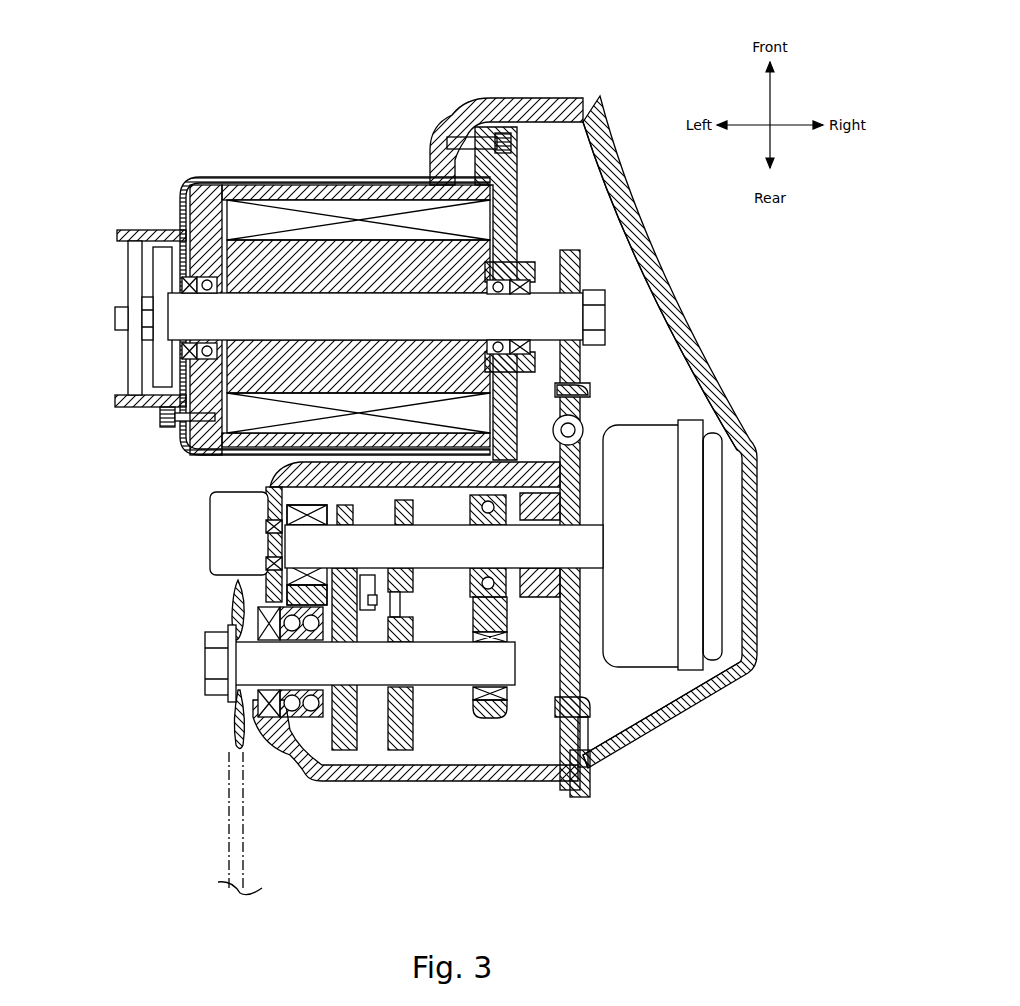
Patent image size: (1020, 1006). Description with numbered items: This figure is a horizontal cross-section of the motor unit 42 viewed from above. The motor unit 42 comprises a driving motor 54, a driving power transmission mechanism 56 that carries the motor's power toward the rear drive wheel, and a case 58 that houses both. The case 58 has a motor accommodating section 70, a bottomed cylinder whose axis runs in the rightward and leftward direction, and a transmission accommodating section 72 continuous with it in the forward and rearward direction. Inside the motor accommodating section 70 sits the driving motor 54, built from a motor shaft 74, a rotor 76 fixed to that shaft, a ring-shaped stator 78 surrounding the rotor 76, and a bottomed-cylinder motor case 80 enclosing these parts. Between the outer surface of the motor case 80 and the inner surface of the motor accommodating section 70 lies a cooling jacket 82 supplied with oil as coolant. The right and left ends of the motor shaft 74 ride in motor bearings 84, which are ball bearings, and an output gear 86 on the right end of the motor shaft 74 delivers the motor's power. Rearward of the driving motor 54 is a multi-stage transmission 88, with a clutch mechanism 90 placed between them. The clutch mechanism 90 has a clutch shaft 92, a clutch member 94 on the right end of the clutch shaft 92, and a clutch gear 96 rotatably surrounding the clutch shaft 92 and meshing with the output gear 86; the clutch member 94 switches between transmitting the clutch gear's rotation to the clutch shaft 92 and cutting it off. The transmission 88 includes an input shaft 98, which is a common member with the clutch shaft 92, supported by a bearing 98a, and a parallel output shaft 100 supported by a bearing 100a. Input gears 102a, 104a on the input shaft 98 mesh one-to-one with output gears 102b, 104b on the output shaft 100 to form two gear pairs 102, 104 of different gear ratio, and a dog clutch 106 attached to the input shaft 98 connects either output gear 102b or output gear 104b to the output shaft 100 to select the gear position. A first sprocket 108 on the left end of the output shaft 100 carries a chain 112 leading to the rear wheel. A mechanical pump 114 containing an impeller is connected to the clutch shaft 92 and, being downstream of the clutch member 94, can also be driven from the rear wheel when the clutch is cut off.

The motor unit 42 is at (706, 323).
The driving motor 54 is at (516, 234).
The driving power transmission mechanism 56 is at (603, 677).
The case 58 is at (517, 100).
The motor accommodating section 70 is at (312, 178).
The transmission accommodating section 72 is at (527, 785).
The motor shaft 74 is at (570, 318).
The rotor 76 is at (356, 262).
The stator 78 is at (345, 215).
The motor case 80 is at (266, 185).
The cooling jacket 82 is at (220, 175).
The motor bearing 84 is at (240, 279).
The output gear 86 is at (583, 362).
The transmission 88 is at (465, 732).
The clutch mechanism 90 is at (705, 545).
The clutch shaft 92 is at (585, 550).
The clutch member 94 is at (645, 583).
The clutch gear 96 is at (555, 678).
The input shaft 98 is at (298, 543).
The bearing 98a is at (470, 578).
The output shaft 100 is at (247, 666).
The bearing 100a is at (302, 719).
The gear pair 102 is at (343, 750).
The input gear 102a is at (327, 518).
The output gear 102b is at (300, 740).
The gear pair 104 is at (410, 752).
The input gear 104a is at (350, 508).
The output gear 104b is at (443, 702).
The dog clutch 106 is at (372, 735).
The first sprocket 108 is at (237, 722).
The chain 112 is at (227, 823).
The mechanical pump 114 is at (200, 536).